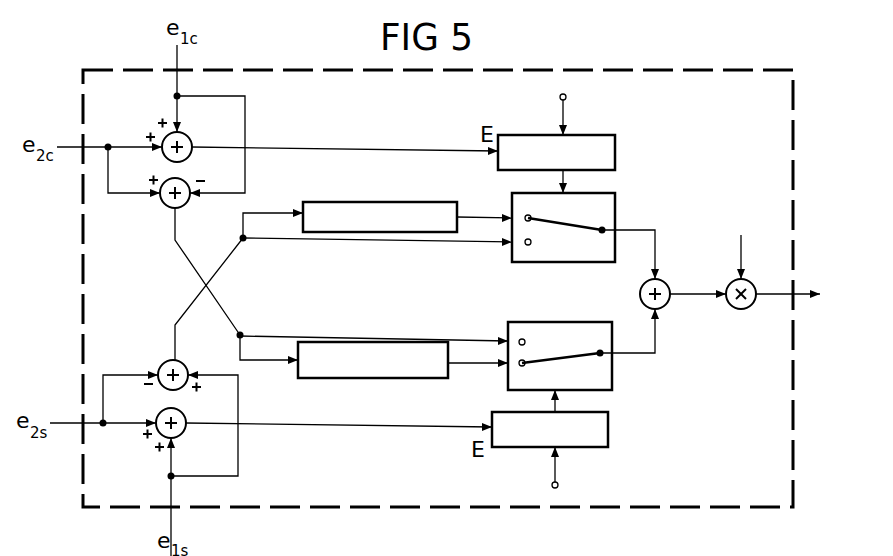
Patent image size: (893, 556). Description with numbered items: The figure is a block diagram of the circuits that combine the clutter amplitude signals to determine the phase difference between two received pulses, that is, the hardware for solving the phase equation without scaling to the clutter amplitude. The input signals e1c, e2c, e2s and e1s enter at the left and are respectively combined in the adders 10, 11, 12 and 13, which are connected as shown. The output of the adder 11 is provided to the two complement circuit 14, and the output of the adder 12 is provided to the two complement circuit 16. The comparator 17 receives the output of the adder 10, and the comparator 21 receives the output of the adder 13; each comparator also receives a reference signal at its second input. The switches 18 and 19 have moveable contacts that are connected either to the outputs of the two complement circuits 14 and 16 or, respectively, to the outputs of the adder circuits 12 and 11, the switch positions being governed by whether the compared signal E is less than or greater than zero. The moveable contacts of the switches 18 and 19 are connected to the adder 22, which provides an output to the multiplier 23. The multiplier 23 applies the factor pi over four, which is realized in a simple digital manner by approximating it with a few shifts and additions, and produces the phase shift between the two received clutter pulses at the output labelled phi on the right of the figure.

The adder 10 is at (163, 134).
The adder 11 is at (193, 186).
The adder 12 is at (162, 364).
The adder 13 is at (184, 432).
The two complement circuit 14 is at (366, 202).
The two complement circuit 16 is at (375, 378).
The comparator 17 is at (606, 134).
The switch 18 is at (610, 205).
The switch 19 is at (578, 328).
The comparator 21 is at (608, 425).
The adder 22 is at (666, 284).
The multiplier 23 is at (738, 309).